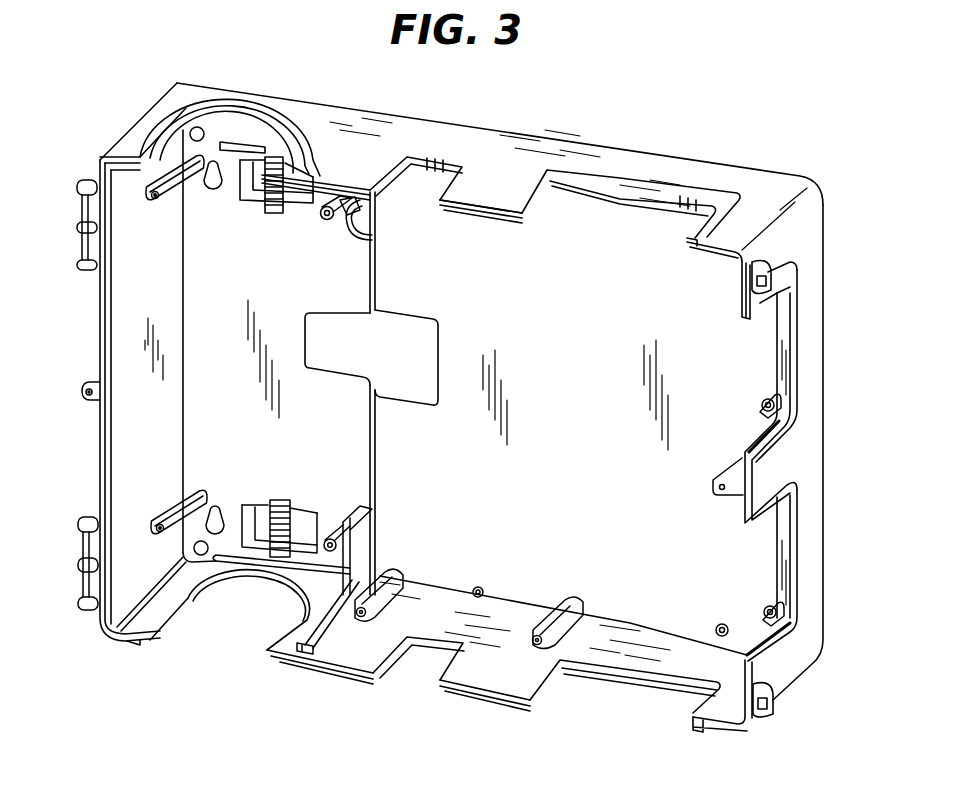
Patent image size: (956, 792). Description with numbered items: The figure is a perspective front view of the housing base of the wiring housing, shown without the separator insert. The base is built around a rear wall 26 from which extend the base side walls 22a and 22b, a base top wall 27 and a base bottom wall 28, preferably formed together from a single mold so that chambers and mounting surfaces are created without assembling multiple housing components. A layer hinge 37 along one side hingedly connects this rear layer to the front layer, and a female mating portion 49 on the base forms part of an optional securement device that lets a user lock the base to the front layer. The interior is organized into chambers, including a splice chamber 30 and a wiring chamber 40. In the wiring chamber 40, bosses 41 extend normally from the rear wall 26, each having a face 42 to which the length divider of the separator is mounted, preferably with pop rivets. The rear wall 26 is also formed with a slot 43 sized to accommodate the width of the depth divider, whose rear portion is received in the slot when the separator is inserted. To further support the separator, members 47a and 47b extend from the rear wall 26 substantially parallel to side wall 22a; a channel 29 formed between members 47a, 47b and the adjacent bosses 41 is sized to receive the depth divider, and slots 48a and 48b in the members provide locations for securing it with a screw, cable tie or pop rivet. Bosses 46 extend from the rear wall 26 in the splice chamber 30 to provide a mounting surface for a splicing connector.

The rear wall 26 is at (588, 416).
The base top wall 27 is at (768, 190).
The base bottom wall 28 is at (490, 697).
The channel 29 is at (346, 628).
The splice chamber 30 is at (132, 418).
The base side wall 22a is at (148, 438).
The base side wall 22b is at (795, 457).
The layer hinge 37 is at (88, 282).
The wiring chamber 40 is at (489, 238).
The bosses 41 is at (398, 572).
The face 42 is at (372, 613).
The slot 43 is at (378, 462).
The bosses 46 is at (155, 200).
The member 47a is at (357, 242).
The member 47b is at (368, 528).
The slot 48a is at (362, 212).
The slot 48b is at (310, 655).
The female mating portion 49 is at (86, 388).